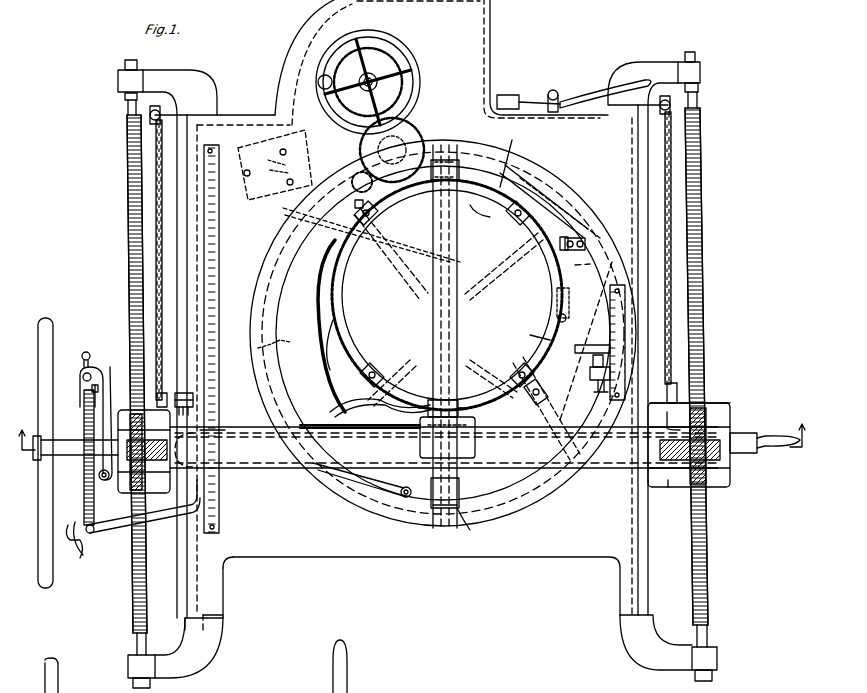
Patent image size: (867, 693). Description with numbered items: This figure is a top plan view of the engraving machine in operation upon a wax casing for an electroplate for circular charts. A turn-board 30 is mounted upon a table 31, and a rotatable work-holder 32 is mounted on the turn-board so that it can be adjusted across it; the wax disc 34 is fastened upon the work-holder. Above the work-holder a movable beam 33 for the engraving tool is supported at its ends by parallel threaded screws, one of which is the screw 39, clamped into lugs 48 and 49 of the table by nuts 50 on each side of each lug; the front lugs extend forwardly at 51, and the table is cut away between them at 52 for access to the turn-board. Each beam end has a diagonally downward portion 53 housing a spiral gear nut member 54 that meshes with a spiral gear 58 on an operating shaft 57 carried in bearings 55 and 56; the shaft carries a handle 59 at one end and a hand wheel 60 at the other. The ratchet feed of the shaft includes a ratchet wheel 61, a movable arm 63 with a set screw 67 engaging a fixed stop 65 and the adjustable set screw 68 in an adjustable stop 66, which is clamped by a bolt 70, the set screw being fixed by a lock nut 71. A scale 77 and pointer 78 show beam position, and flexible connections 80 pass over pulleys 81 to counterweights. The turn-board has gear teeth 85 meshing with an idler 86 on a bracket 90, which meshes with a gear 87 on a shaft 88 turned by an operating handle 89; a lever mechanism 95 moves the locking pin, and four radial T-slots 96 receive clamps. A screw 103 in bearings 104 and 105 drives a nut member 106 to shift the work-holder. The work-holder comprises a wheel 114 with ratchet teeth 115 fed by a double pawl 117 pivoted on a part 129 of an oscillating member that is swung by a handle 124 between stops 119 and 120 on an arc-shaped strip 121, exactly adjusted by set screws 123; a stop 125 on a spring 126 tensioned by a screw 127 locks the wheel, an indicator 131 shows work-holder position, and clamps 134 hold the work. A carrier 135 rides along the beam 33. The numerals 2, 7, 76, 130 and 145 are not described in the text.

The section line 2 is at (408, 427).
The central bar 7 is at (448, 150).
The turn-board 30 is at (530, 166).
The table 31 is at (414, 307).
The rotatable work-holder 32 is at (335, 318).
The beam 33 is at (690, 400).
The wax disc 34 is at (447, 295).
The parallel screw 39 is at (708, 283).
The lug 48 is at (423, 646).
The lug 49 is at (410, 340).
The nut 50 is at (118, 70).
The forward extension of lug 51 is at (228, 665).
The cut-away portion 52 is at (225, 590).
The diagonally downward extending portion 53 is at (290, 470).
The spiral gear nut member 54 is at (260, 427).
The bearing 55 is at (439, 400).
The bearing 56 is at (700, 400).
The operating shaft 57 is at (680, 480).
The spiral gear 58 is at (128, 252).
The handle 59 is at (782, 450).
The hand wheel 60 is at (38, 318).
The ratchet wheel 61 is at (84, 405).
The circumferentially movable arm 63 is at (78, 480).
The fixed stop 65 is at (79, 549).
The adjustable stop 66 is at (103, 378).
The set screw 67 is at (95, 533).
The adjustable set screw 68 is at (82, 374).
The bolt 70 is at (106, 482).
The lock nut 71 is at (90, 354).
The stop 76 is at (86, 392).
The scale 77 is at (228, 268).
The pointer 78 is at (200, 398).
The flexible connection 80 is at (672, 235).
The pulley 81 is at (148, 110).
The gear teeth 85 is at (352, 187).
The idler 86 is at (408, 132).
The gear 87 is at (395, 78).
The shaft 88 is at (385, 82).
The operating handle 89 is at (320, 76).
The bracket 90 is at (252, 200).
The lever mechanism 95 is at (600, 92).
The radial T-slot 96 is at (310, 485).
The screw 103 is at (432, 505).
The front end bearing 104 is at (460, 528).
The rear end bearing 105 is at (478, 209).
The nut member 106 is at (485, 270).
The wheel 114 is at (552, 190).
The ratchet teeth 115 is at (425, 254).
The double pawl 117 is at (556, 312).
The adjustable stop 119 is at (585, 240).
The adjustable stop 120 is at (546, 408).
The arc-shaped supporting strip 121 is at (585, 368).
The adjustable set screw 123 is at (440, 528).
The handle 124 is at (400, 495).
The stop 125 is at (594, 335).
The spring 126 is at (258, 348).
The screw 127 is at (365, 413).
The pivot part 129 is at (395, 438).
The screw 130 is at (592, 392).
The indicator 131 is at (610, 328).
The clamp 134 is at (375, 213).
The carrier 135 is at (475, 450).
The stud 145 is at (355, 208).